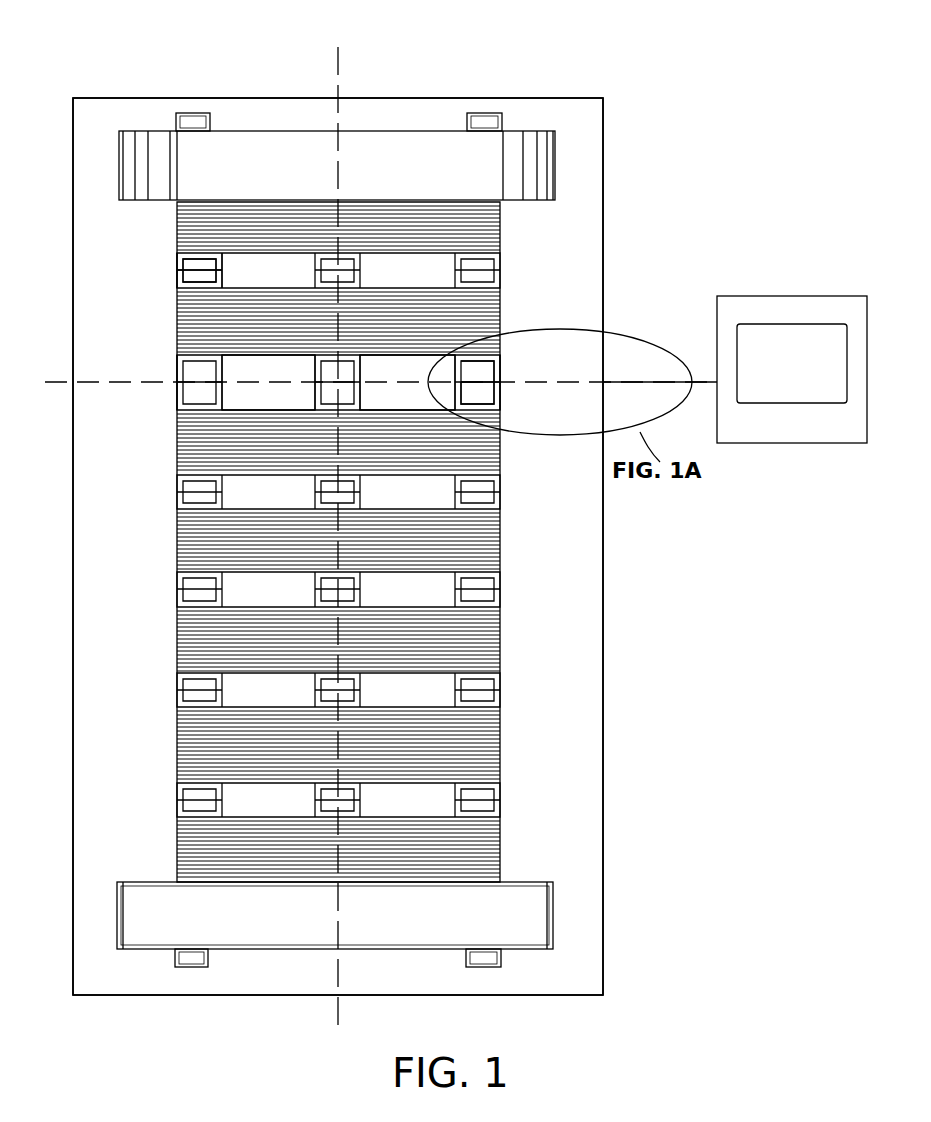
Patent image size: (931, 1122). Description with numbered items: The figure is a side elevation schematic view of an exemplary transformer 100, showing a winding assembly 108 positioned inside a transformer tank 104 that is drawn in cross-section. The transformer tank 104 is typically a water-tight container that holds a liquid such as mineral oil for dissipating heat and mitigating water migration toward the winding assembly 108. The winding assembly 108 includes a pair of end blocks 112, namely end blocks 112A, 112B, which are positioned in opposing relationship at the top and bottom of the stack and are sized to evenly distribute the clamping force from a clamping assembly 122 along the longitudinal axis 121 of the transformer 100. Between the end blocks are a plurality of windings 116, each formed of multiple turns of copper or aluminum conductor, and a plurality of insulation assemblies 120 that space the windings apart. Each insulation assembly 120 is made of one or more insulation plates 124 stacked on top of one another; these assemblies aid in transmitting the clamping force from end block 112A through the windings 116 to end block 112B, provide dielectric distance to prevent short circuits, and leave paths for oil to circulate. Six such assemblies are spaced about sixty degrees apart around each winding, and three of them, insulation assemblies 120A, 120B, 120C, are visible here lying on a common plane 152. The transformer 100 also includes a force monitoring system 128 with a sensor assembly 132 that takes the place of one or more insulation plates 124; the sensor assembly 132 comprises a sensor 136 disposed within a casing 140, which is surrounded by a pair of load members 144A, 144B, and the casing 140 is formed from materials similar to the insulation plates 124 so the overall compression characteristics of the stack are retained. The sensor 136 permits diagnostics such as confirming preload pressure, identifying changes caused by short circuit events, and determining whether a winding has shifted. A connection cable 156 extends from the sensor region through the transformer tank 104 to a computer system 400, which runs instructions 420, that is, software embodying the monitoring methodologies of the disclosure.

The transformer 100 is at (578, 70).
The transformer tank 104 is at (225, 98).
The winding assembly 108 is at (585, 160).
The end blocks 112 is at (336, 544).
The end block 112A is at (415, 131).
The end block 112B is at (265, 950).
The windings 116 is at (505, 222).
The insulation assemblies 120 is at (348, 535).
The insulation assembly 120A is at (175, 382).
The insulation assembly 120B is at (312, 382).
The insulation assembly 120C is at (452, 382).
The longitudinal axis 121 is at (345, 65).
The clamping assembly 122 is at (485, 113).
The insulation plates 124 is at (190, 262).
The force monitoring system 128 is at (505, 322).
The sensor assembly 132 is at (505, 375).
The sensor 136 is at (470, 386).
The casing 140 is at (470, 388).
The load member 144A is at (465, 372).
The load member 144B is at (470, 398).
The plane 152 is at (60, 383).
The connection cable 156 is at (620, 385).
The computer system 400 is at (727, 296).
The instructions 420 is at (770, 403).